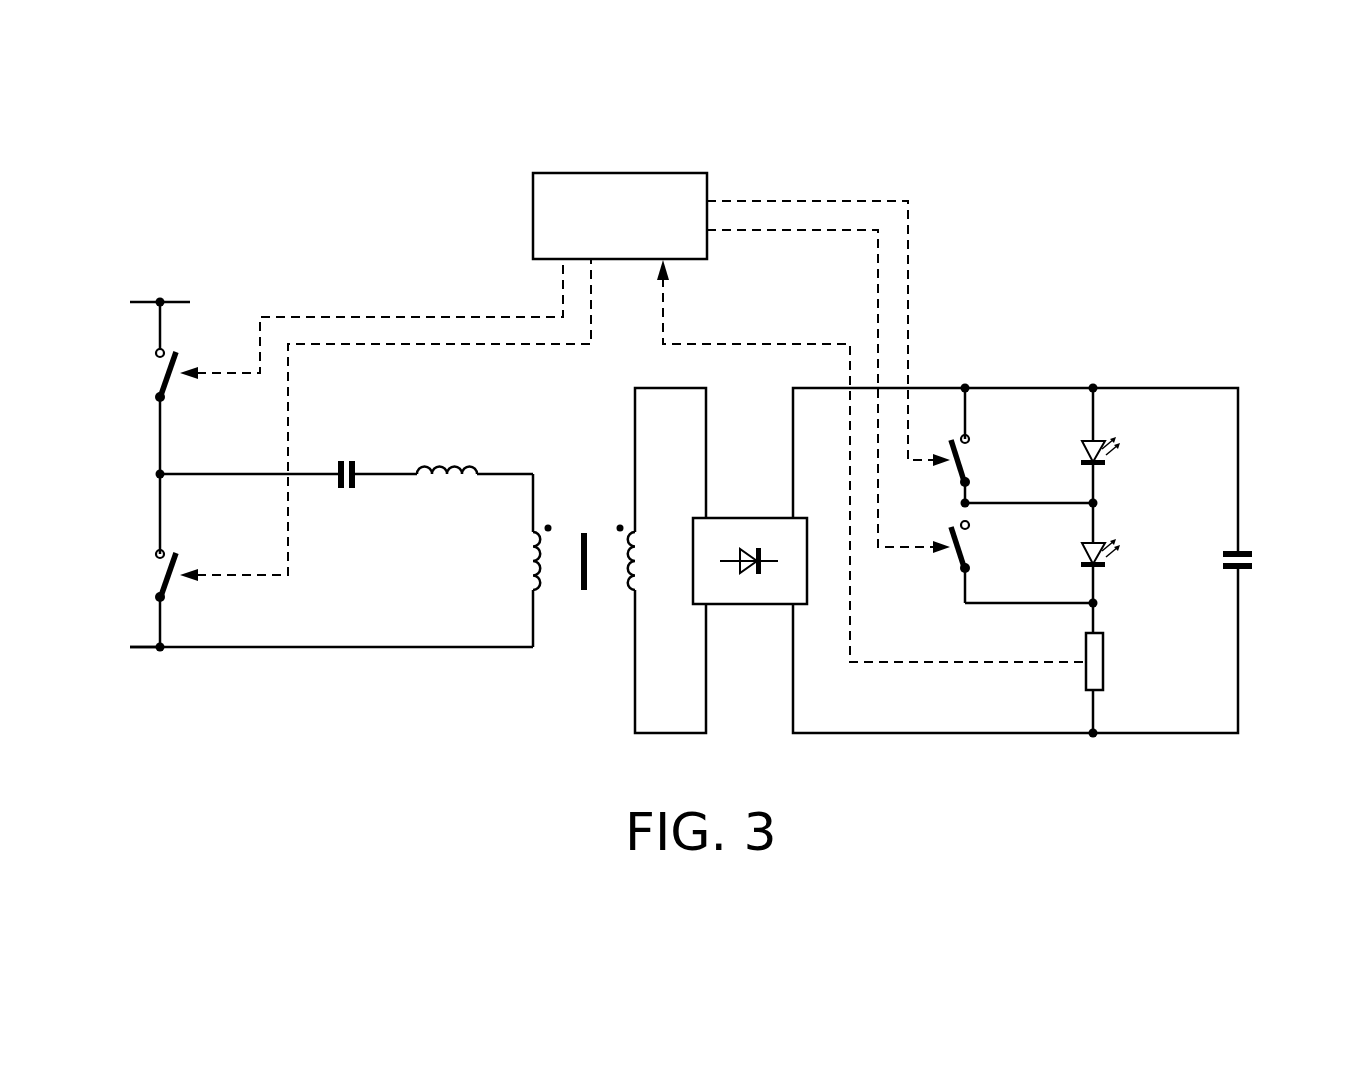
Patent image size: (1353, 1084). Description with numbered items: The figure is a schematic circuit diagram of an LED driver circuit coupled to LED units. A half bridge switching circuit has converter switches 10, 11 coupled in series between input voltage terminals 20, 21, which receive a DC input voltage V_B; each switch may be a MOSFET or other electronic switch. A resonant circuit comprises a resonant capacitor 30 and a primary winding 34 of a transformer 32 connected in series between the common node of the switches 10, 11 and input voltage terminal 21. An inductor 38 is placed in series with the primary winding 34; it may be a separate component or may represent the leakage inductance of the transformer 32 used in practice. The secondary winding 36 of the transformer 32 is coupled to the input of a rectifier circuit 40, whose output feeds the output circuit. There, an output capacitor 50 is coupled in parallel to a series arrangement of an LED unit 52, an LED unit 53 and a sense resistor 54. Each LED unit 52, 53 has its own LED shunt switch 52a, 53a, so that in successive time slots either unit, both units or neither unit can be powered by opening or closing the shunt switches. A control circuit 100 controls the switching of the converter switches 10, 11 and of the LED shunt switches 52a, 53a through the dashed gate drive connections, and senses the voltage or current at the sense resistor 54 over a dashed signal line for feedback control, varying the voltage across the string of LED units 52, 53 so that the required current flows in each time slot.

The converter switch 10 is at (156, 373).
The converter switch 11 is at (156, 575).
The input voltage terminal 20 is at (144, 300).
The input voltage terminal 21 is at (138, 650).
The resonant capacitor 30 is at (345, 490).
The transformer 32 is at (584, 490).
The primary winding 34 is at (537, 592).
The secondary winding 36 is at (630, 592).
The inductor 38 is at (458, 478).
The rectifier circuit 40 is at (750, 606).
The output capacitor 50 is at (1255, 560).
The LED unit 52 is at (1106, 455).
The LED shunt switch 52a is at (970, 465).
The LED unit 53 is at (1106, 557).
The LED shunt switch 53a is at (970, 551).
The sense resistor 54 is at (1105, 645).
The control circuit 100 is at (533, 207).